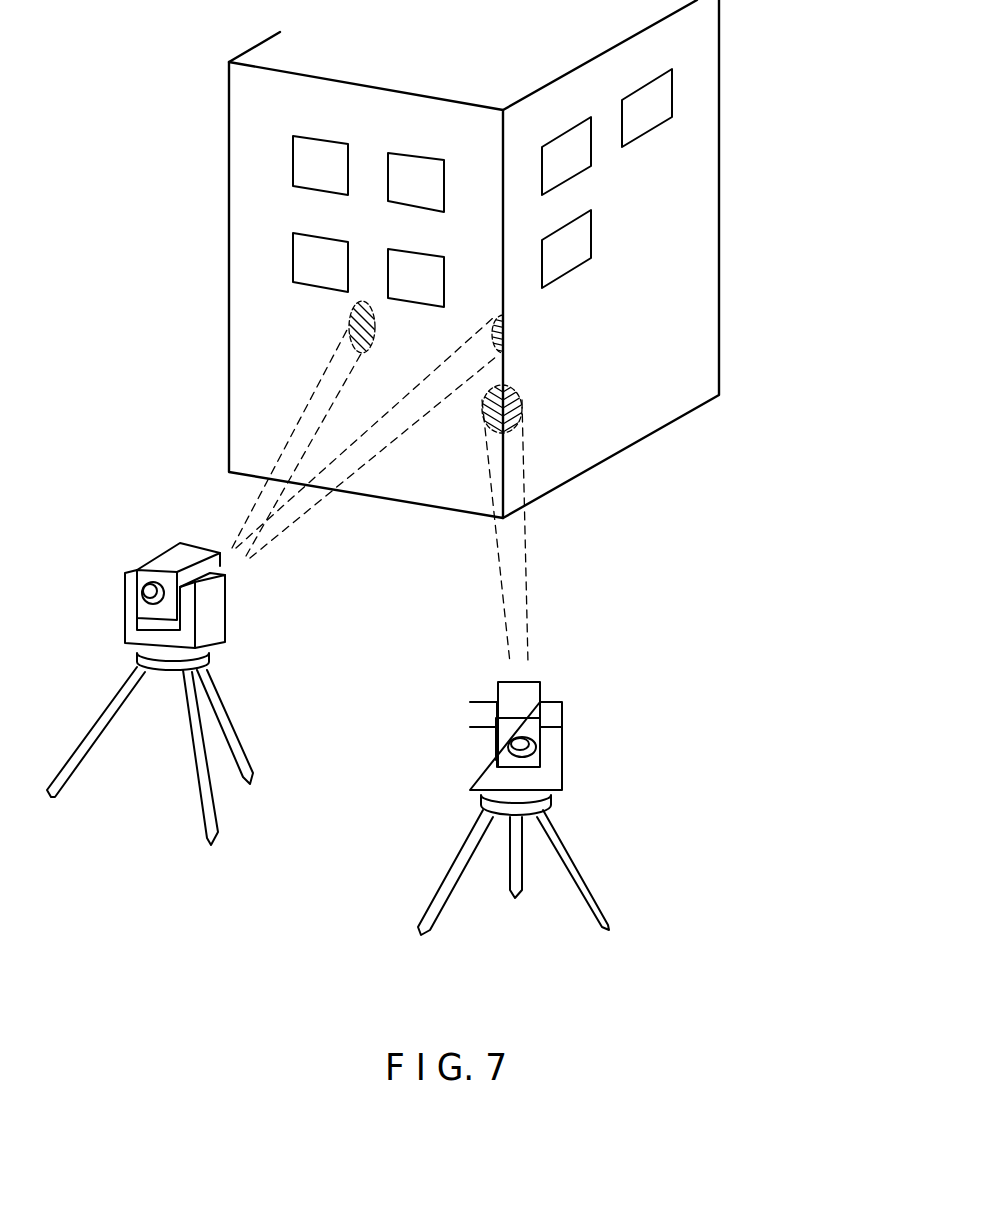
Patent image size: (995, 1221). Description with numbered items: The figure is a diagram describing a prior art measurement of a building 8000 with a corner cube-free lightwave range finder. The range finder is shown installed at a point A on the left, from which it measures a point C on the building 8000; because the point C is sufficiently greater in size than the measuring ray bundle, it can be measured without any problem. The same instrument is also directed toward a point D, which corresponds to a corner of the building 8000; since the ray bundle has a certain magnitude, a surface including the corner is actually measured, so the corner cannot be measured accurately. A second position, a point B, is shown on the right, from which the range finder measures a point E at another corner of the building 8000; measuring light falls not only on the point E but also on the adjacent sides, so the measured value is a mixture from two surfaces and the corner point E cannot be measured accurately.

The building 8000 is at (719, 317).
The point A is at (160, 815).
The point B is at (537, 925).
The point C is at (348, 322).
The point D is at (503, 325).
The point E is at (520, 407).